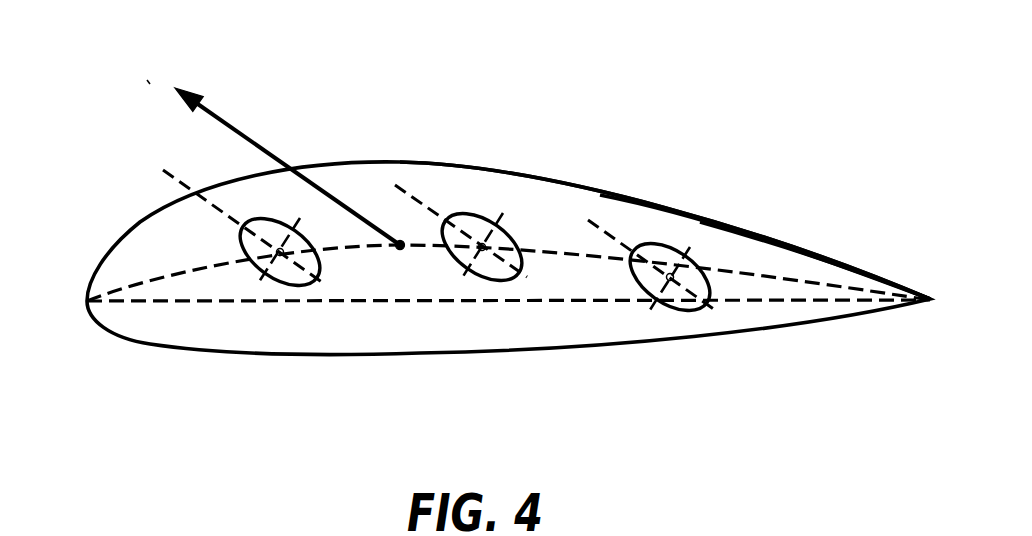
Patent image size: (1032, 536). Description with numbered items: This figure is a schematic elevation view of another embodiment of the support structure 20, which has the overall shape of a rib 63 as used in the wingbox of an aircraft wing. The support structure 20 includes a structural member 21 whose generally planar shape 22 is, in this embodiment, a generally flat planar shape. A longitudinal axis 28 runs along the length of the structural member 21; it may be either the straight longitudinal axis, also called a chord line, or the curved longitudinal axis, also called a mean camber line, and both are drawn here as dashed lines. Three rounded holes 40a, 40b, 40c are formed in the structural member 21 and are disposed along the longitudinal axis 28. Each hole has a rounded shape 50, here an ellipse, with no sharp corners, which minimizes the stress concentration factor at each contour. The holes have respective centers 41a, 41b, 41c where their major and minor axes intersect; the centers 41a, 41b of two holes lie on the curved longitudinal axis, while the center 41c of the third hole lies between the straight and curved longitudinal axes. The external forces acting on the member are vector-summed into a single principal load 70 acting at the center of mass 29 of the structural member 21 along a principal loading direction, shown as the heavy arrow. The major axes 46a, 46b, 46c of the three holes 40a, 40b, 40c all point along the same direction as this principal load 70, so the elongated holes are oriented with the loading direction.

The support structure 20 is at (147, 80).
The structural member 21 is at (540, 197).
The generally planar shape 22 is at (788, 125).
The longitudinal axis 28 is at (97, 414).
The center of mass 29 is at (399, 247).
The first rounded hole 40a is at (275, 280).
The second rounded hole 40b is at (465, 253).
The third rounded hole 40c is at (648, 290).
The center of first rounded hole 41a is at (281, 253).
The center of second rounded hole 41b is at (482, 248).
The center of third rounded hole 41c is at (670, 278).
The major axis of first rounded hole 46a is at (182, 182).
The major axis of second rounded hole 46b is at (420, 200).
The major axis of third rounded hole 46c is at (613, 240).
The shape 50 is at (665, 108).
The rib 63 is at (535, 108).
The principal load 70 is at (241, 131).